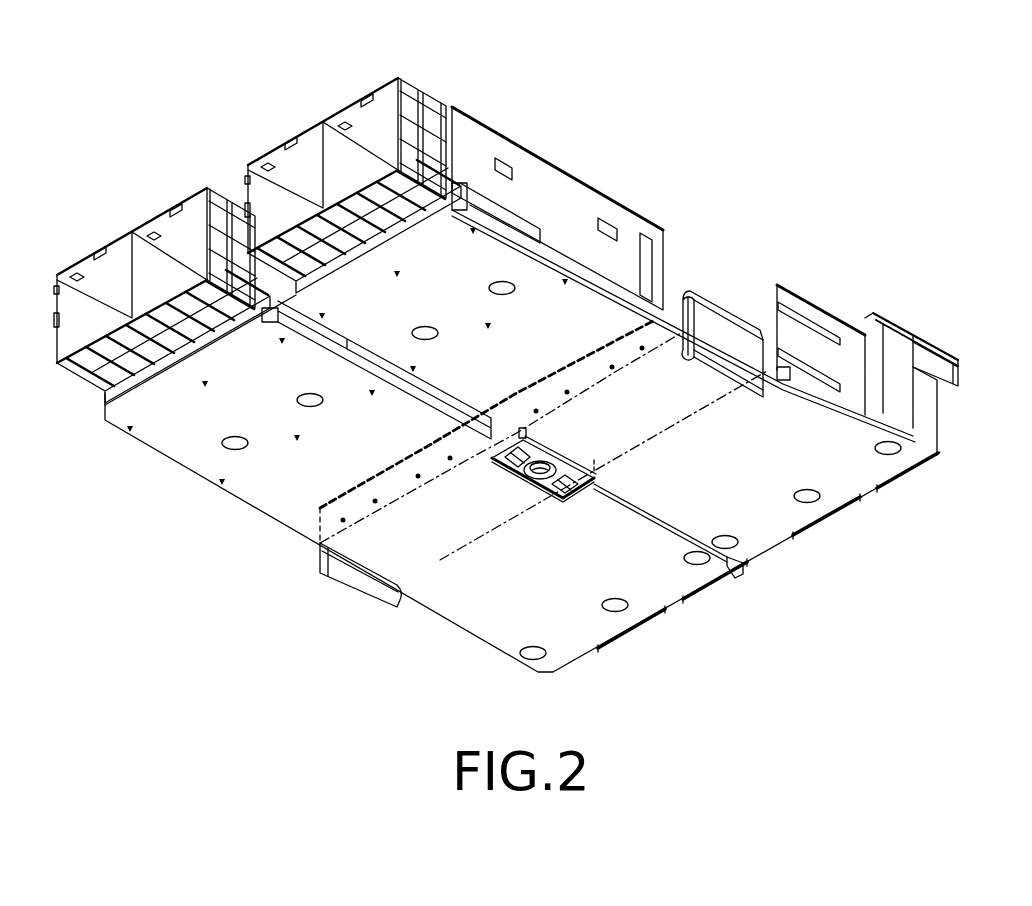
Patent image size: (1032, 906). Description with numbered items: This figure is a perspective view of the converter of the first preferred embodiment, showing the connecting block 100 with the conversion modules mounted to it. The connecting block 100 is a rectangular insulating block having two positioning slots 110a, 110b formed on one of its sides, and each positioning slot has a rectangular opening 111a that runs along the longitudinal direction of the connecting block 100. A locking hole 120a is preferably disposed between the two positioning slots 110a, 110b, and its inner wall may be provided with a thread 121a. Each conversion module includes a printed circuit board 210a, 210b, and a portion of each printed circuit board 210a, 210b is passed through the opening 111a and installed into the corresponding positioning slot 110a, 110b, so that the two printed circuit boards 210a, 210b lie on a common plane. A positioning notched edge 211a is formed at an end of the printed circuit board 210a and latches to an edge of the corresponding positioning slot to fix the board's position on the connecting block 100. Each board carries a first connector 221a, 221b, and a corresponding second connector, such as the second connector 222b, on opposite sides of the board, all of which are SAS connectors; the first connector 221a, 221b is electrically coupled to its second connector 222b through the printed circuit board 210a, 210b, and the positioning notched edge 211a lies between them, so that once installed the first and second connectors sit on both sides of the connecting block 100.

The connecting block 100 is at (311, 573).
The positioning slot 110a is at (470, 546).
The positioning slot 110b is at (667, 430).
The opening 111a is at (362, 592).
The locking hole 120a is at (535, 484).
The thread 121a is at (541, 476).
The printed circuit board 210a is at (378, 568).
The printed circuit board 210b is at (887, 468).
The positioning notched edge 211a is at (495, 458).
The first connector 221a is at (118, 238).
The first connector 221b is at (313, 127).
The second connector 222b is at (903, 331).